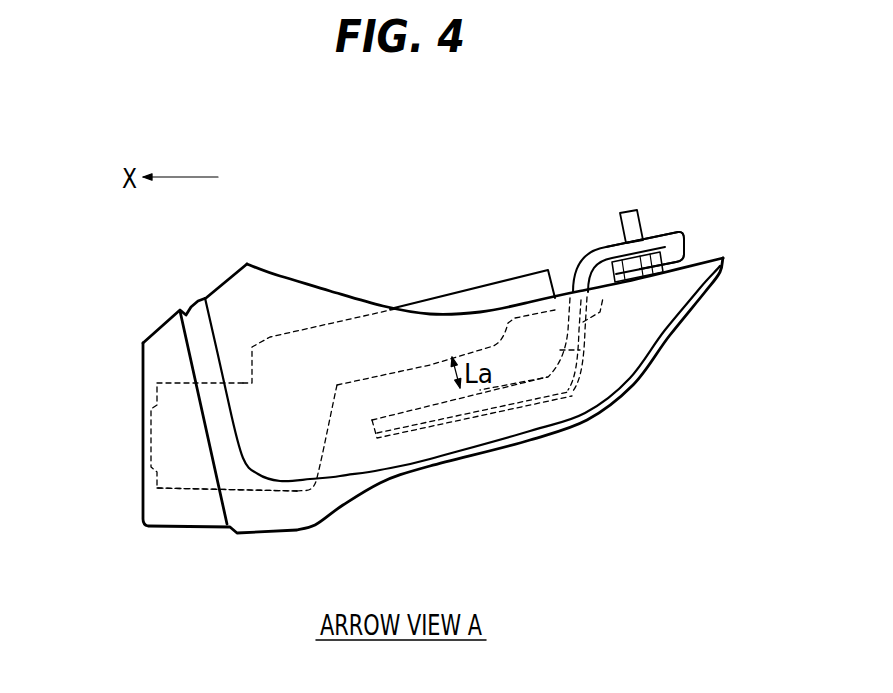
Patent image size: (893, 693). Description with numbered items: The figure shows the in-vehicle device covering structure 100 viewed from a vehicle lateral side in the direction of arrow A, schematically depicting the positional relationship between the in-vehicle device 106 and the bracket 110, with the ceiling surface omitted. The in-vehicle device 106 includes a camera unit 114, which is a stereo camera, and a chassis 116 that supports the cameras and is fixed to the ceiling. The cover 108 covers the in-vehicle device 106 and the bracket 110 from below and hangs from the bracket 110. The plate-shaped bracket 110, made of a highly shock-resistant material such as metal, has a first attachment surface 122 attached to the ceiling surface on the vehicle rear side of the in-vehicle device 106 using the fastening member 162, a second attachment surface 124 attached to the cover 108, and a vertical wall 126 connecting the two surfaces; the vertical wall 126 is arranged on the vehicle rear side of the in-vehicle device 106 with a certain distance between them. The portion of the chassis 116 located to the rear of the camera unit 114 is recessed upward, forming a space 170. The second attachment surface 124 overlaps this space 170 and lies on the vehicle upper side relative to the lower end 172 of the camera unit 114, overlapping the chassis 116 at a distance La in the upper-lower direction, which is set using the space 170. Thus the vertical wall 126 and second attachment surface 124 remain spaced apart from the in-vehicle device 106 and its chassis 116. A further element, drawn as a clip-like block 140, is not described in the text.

The in-vehicle device covering structure 100 is at (577, 455).
The in-vehicle device 106 is at (487, 278).
The cover 108 is at (312, 280).
The bracket 110 is at (585, 252).
The camera unit 114 is at (168, 425).
The chassis 116 is at (411, 363).
The first attachment surface 122 is at (676, 242).
The second attachment surface 124 is at (482, 405).
The vertical wall 126 is at (590, 346).
The clip block 140 is at (642, 278).
The fastening member 162 is at (632, 223).
The space 170 is at (416, 397).
The lower end 172 is at (188, 490).